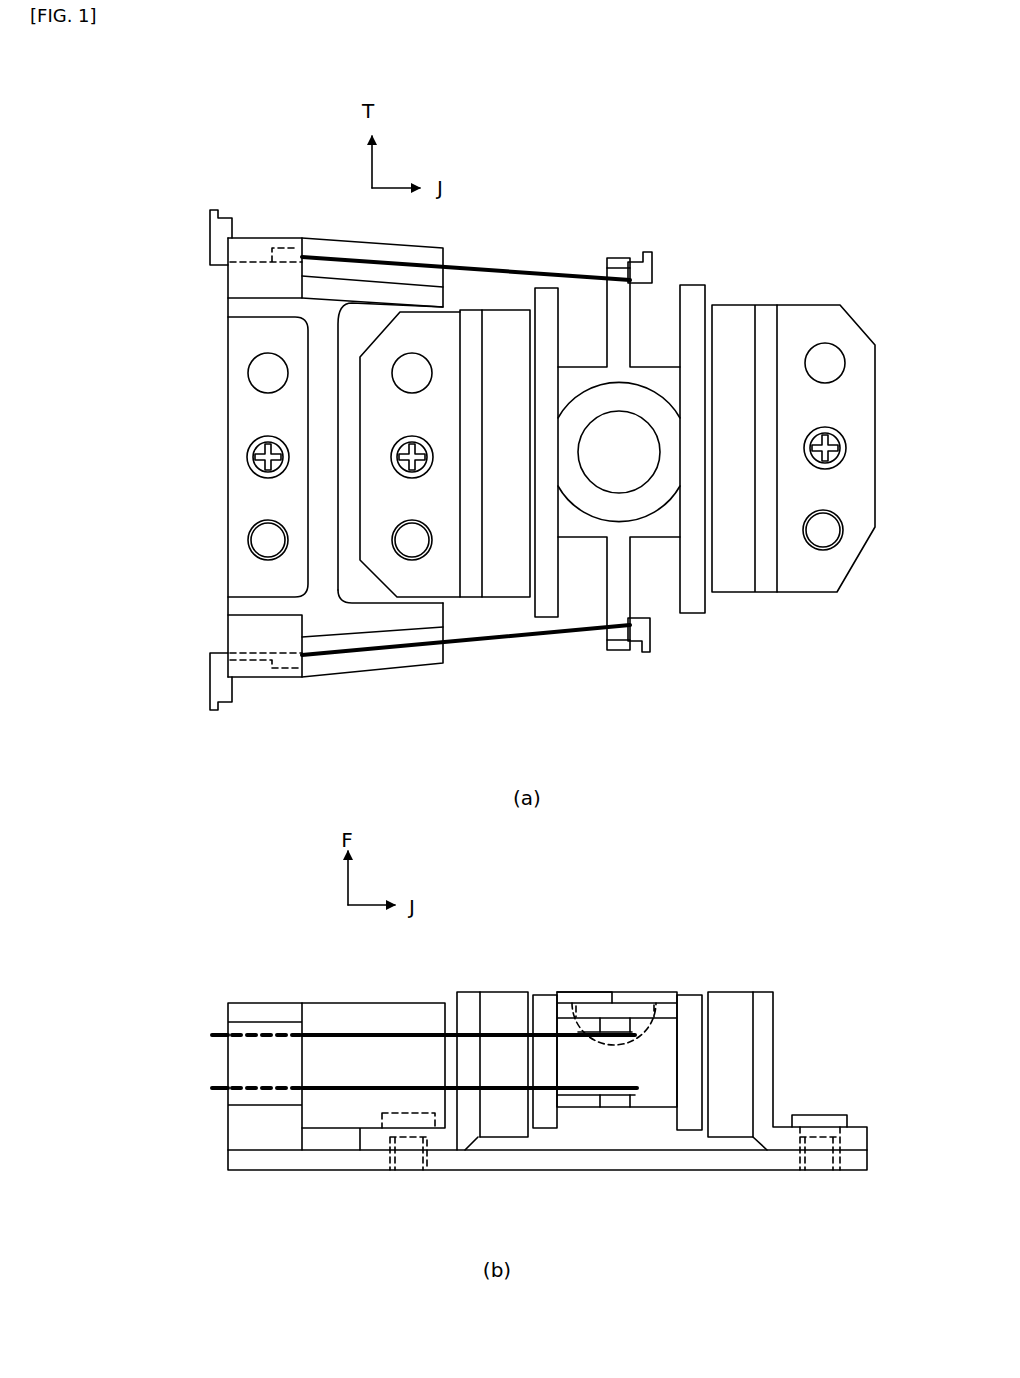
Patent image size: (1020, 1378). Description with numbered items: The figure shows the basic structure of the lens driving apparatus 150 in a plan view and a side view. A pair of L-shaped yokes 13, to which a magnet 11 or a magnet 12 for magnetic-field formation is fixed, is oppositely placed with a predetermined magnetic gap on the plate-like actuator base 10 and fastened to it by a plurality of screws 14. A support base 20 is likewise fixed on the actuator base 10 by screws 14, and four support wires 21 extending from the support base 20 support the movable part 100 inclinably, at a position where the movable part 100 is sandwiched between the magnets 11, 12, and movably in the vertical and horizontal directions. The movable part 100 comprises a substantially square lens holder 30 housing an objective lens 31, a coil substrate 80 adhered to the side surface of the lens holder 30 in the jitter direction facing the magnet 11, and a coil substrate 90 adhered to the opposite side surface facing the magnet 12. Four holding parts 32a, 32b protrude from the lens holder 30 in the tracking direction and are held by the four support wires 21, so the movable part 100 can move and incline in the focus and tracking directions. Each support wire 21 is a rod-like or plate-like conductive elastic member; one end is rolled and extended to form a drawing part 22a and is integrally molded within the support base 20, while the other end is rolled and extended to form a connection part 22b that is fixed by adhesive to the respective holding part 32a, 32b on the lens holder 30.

The actuator base 10 is at (778, 1170).
The magnet 11 is at (735, 594).
The magnet 12 is at (507, 598).
The L-shaped yoke 13 is at (820, 303).
The screw 14 is at (252, 463).
The support base 20 is at (267, 245).
The support wire 21 is at (452, 262).
The drawing part 22a is at (220, 208).
The connection part 22b is at (652, 252).
The lens holder 30 is at (690, 378).
The objective lens 31 is at (623, 460).
The holding part 32a is at (613, 257).
The holding part 32b is at (612, 1105).
The coil substrate 80 is at (695, 283).
The coil substrate 90 is at (547, 285).
The movable part 100 is at (683, 185).
The lens driving apparatus 150 is at (492, 183).